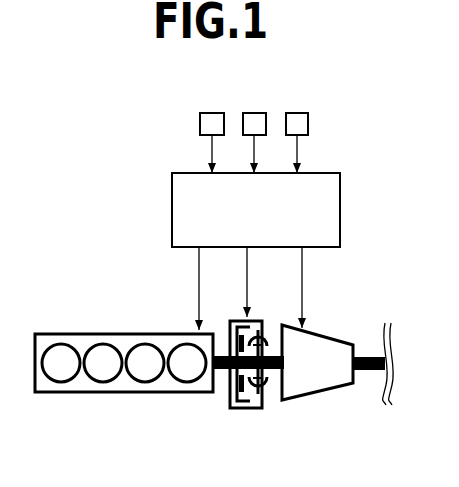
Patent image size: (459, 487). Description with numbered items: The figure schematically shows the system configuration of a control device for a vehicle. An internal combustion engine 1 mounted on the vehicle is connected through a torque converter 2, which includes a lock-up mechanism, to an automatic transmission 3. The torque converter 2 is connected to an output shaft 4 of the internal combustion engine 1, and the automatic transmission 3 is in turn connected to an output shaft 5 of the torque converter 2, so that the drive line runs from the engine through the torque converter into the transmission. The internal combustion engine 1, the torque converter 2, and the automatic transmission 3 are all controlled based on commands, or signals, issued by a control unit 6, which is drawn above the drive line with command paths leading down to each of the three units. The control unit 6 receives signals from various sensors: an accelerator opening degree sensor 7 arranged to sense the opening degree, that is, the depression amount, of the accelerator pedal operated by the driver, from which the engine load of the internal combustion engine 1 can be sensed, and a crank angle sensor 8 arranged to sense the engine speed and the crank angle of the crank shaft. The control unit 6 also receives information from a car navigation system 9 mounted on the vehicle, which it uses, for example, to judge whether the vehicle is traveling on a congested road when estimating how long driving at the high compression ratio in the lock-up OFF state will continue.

The internal combustion engine 1 is at (48, 388).
The torque converter 2 is at (235, 410).
The automatic transmission 3 is at (327, 392).
The output shaft 4 is at (220, 372).
The output shaft 5 is at (275, 396).
The control unit 6 is at (340, 208).
The accelerator opening degree sensor 7 is at (200, 121).
The crank angle sensor 8 is at (254, 122).
The car navigation system 9 is at (308, 121).